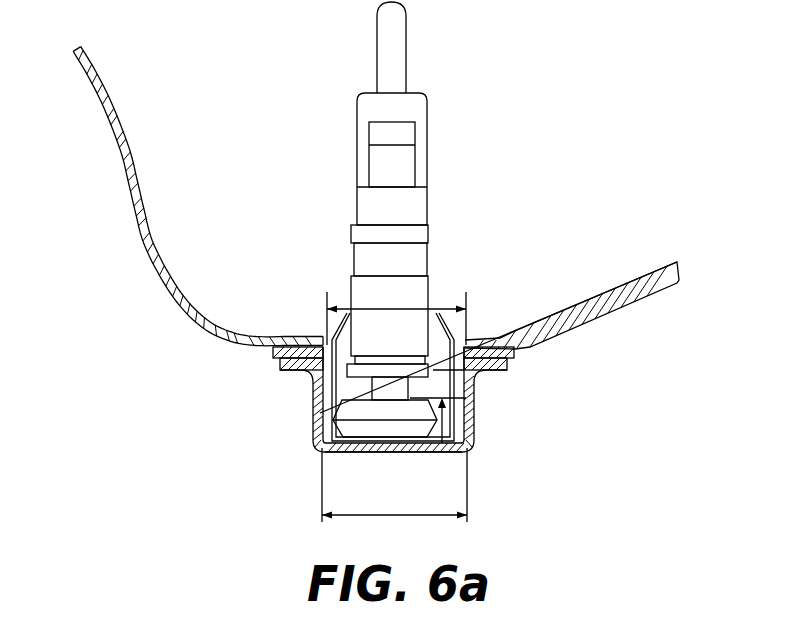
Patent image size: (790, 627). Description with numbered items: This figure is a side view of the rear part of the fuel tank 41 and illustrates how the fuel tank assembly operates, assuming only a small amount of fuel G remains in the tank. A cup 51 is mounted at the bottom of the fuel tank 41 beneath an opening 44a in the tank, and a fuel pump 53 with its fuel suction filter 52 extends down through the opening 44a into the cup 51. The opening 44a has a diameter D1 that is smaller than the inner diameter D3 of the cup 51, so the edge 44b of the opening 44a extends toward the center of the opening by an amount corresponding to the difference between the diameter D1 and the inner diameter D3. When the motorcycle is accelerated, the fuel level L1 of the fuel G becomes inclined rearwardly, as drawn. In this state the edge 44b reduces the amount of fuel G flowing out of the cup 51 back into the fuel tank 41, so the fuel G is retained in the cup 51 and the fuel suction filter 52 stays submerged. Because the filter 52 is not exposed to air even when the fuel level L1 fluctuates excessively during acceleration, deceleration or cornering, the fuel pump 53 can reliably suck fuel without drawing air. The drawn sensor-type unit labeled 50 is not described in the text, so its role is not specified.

The fuel tank 41 is at (140, 245).
The opening 44a is at (467, 345).
The edge 44b is at (322, 340).
The sensor assembly 50 is at (445, 80).
The cup 51 is at (477, 392).
The fuel suction filter 52 is at (362, 453).
The fuel pump 53 is at (428, 281).
The fuel level L1 is at (313, 388).
The fuel G is at (445, 455).
The diameter of the opening D1 is at (405, 306).
The inner diameter of the cup D3 is at (394, 485).